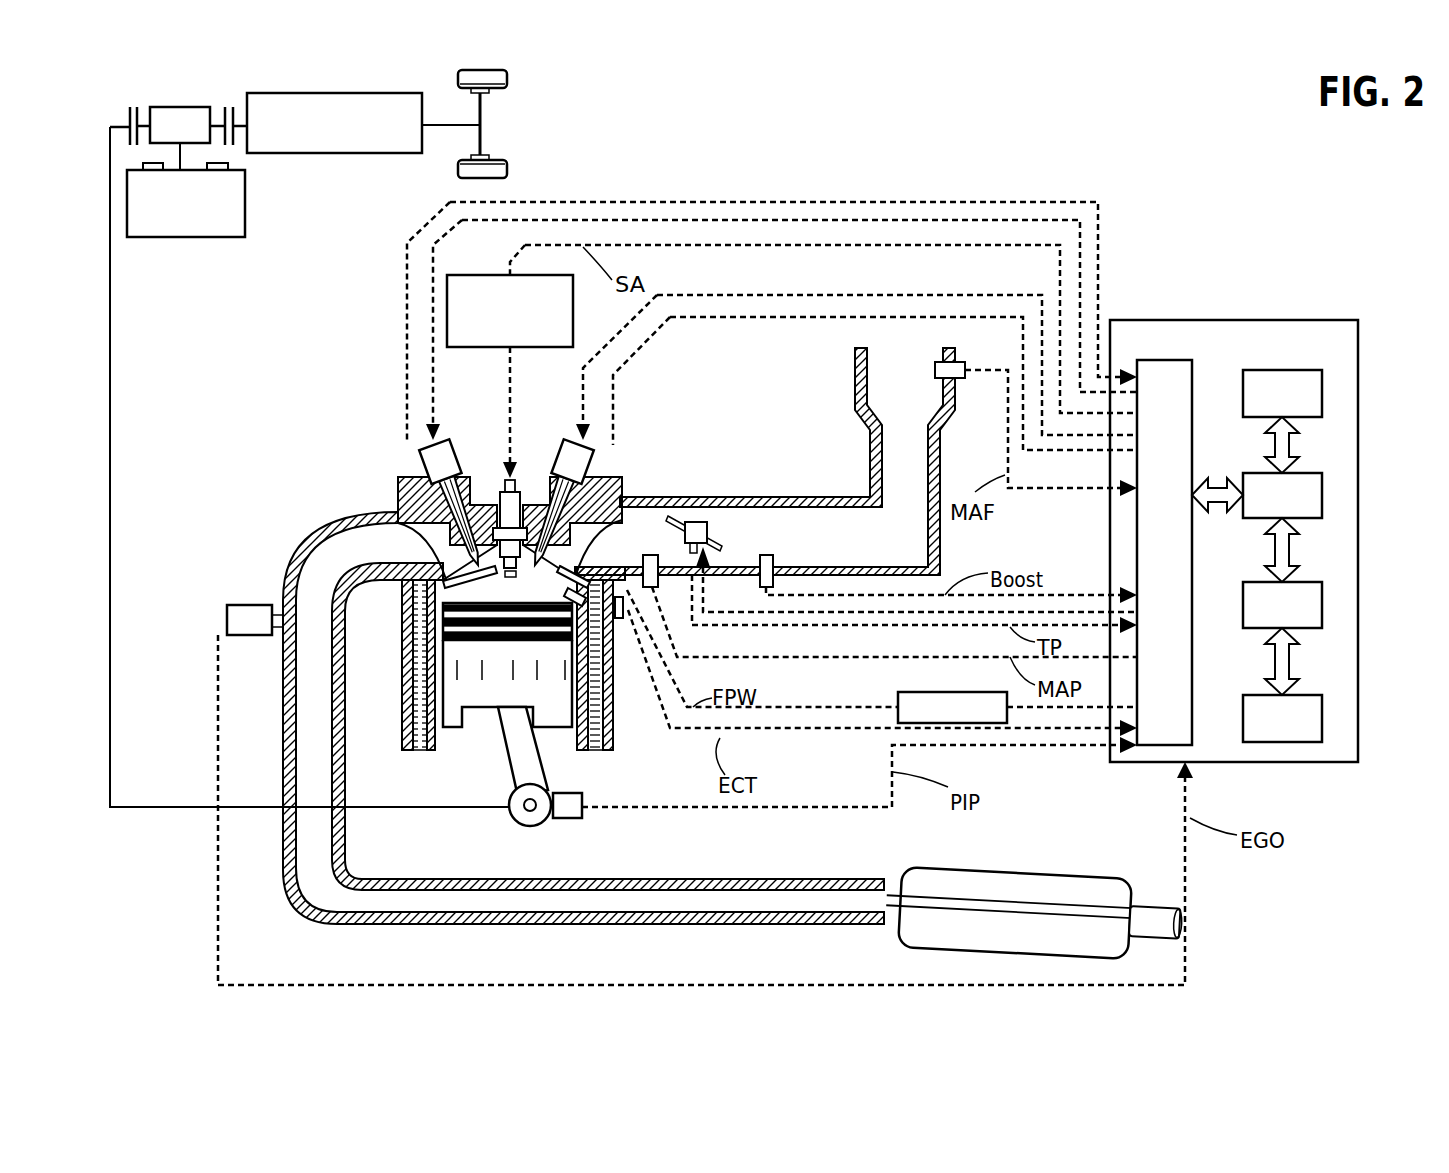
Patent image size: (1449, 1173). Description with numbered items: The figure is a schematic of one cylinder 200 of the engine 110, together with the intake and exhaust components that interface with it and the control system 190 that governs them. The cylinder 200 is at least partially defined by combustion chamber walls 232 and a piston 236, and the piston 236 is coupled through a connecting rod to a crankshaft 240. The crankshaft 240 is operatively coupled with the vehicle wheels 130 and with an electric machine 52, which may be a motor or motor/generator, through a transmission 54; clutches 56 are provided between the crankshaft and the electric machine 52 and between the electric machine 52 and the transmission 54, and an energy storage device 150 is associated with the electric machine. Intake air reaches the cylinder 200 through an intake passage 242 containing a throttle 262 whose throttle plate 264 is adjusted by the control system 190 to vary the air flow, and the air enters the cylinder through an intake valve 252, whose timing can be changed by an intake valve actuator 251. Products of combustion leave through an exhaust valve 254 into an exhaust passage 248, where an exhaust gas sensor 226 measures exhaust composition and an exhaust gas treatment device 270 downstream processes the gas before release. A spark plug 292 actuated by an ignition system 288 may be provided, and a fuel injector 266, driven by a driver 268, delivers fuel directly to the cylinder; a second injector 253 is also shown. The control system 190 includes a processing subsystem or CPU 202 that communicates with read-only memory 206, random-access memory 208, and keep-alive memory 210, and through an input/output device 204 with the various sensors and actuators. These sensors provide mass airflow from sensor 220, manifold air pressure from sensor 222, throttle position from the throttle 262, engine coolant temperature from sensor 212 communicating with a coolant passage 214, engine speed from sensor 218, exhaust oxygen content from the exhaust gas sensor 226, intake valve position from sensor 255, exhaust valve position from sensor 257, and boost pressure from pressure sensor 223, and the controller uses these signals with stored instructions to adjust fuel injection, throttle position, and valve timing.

The electric machine 52 is at (188, 107).
The transmission 54 is at (395, 153).
The clutch 56 is at (130, 108).
The engine 110 is at (468, 625).
The vehicle wheels 130 is at (507, 170).
The energy storage device 150 is at (180, 237).
The control system 190 is at (1278, 536).
The cylinder 200 is at (500, 688).
The processing subsystem (CPU) 202 is at (1323, 490).
The input/output device 204 is at (1195, 372).
The read-only memory (ROM) 206 is at (1323, 390).
The random-access memory (RAM) 208 is at (1323, 602).
The keep-alive memory (KAM) 210 is at (1323, 715).
The engine coolant temperature sensor 212 is at (619, 620).
The coolant passage 214 is at (608, 740).
The engine speed sensor 218 is at (567, 820).
The mass airflow sensor 220 is at (962, 360).
The manifold air pressure sensor 222 is at (652, 590).
The boost pressure sensor 223 is at (760, 578).
The exhaust gas sensor 226 is at (226, 606).
The combustion chamber walls 232 is at (447, 735).
The piston 236 is at (488, 690).
The crankshaft 240 is at (520, 823).
The intake passage 242 is at (923, 402).
The exhaust passage 248 is at (385, 559).
The intake valve actuator 251 is at (591, 474).
The intake valve 252 is at (548, 540).
The direct fuel injector 253 is at (426, 474).
The exhaust valve 254 is at (447, 575).
The intake valve position sensor 255 is at (600, 450).
The exhaust valve position sensor 257 is at (418, 450).
The throttle 262 is at (698, 522).
The throttle plate 264 is at (700, 505).
The fuel injector 266 is at (578, 575).
The driver 268 is at (900, 692).
The exhaust gas treatment device 270 is at (1100, 872).
The ignition system 288 is at (463, 275).
The spark plug 292 is at (505, 505).